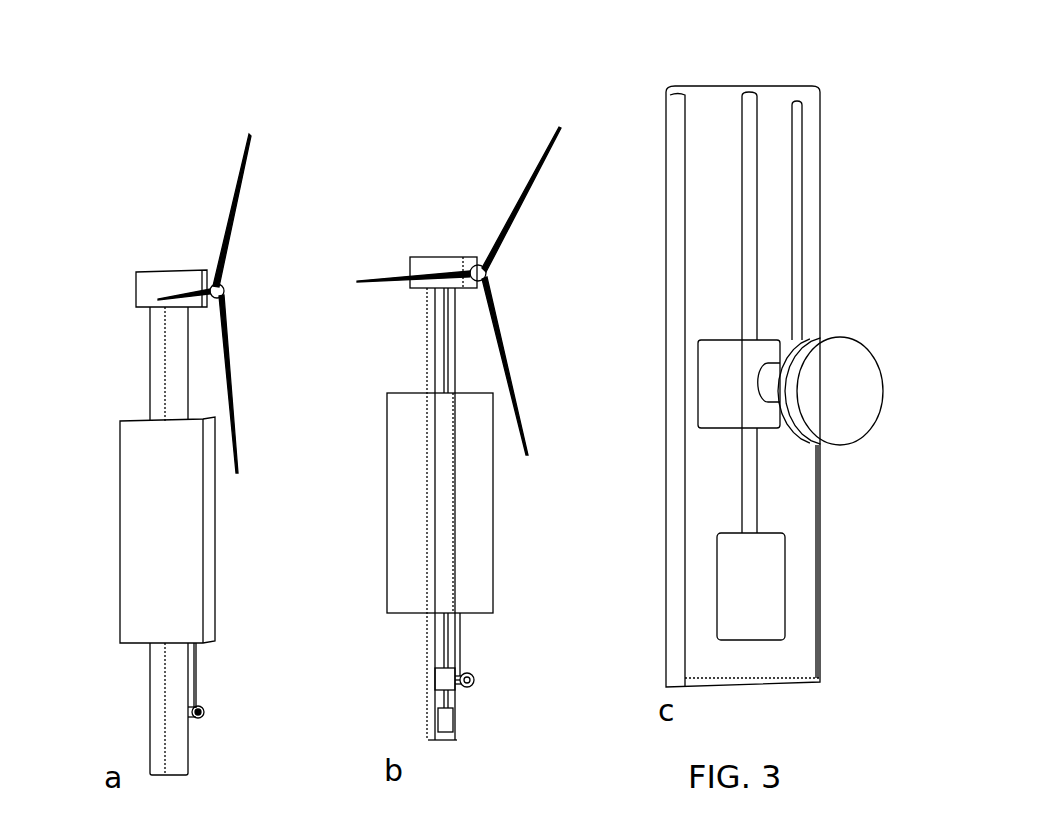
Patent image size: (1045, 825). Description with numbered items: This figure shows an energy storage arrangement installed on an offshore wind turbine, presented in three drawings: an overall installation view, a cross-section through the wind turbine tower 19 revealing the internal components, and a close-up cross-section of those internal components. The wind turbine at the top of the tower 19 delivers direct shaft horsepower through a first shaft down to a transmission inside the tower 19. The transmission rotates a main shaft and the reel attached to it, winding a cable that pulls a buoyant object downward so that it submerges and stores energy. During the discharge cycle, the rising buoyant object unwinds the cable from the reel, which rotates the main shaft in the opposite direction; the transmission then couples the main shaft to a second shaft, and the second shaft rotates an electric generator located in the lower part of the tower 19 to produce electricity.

The tower 19 is at (203, 546).